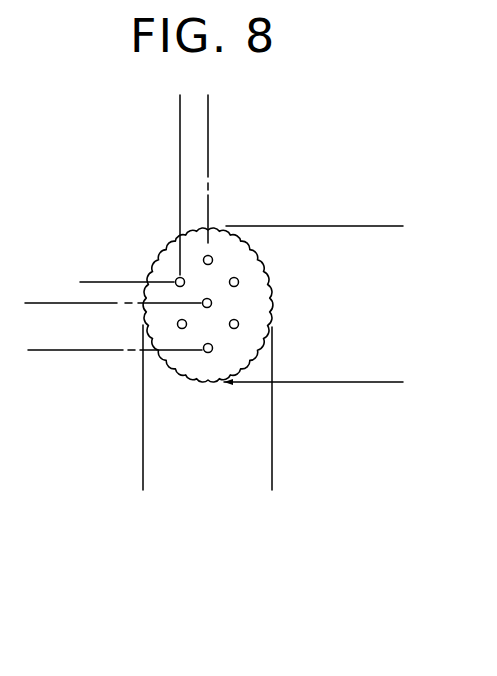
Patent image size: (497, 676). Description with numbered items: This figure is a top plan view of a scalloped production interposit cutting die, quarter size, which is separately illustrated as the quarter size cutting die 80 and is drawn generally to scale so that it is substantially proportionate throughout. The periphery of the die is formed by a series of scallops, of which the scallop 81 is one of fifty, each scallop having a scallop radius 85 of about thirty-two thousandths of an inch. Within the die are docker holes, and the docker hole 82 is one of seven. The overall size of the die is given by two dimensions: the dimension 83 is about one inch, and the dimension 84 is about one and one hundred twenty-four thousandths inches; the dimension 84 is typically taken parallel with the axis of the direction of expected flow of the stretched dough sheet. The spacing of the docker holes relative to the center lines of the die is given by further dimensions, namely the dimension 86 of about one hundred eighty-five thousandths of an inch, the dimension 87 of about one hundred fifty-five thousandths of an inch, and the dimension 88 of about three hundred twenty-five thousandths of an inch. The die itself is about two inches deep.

The quarter size cutting die 80 is at (208, 372).
The scallop 81 is at (182, 376).
The docker hole 82 is at (239, 279).
The die dimension 83 is at (118, 477).
The die dimension 84 is at (393, 226).
The scallop radius 85 is at (218, 288).
The die dimension 86 is at (135, 107).
The die dimension 87 is at (88, 193).
The die dimension 88 is at (33, 250).